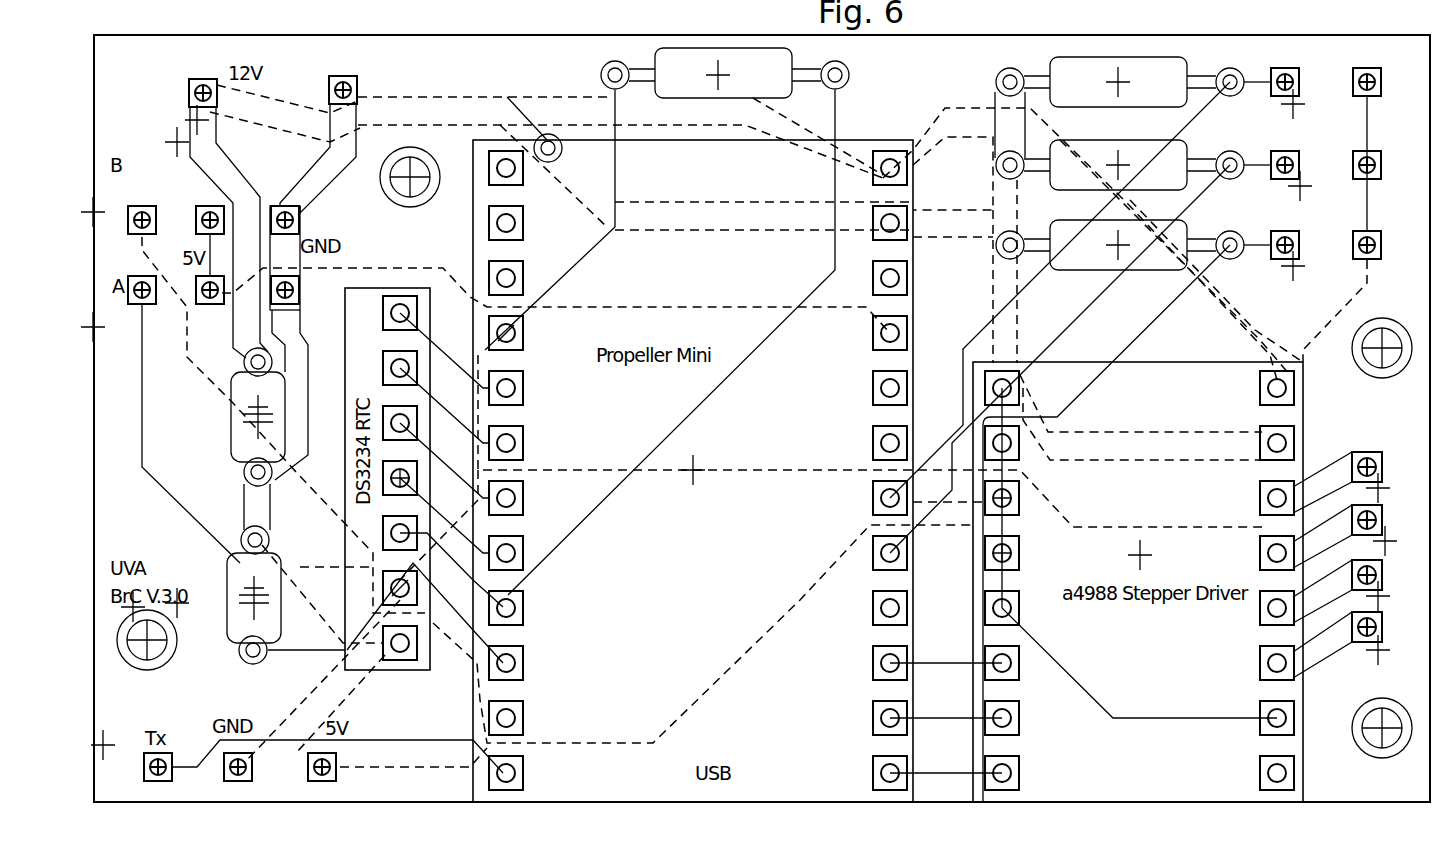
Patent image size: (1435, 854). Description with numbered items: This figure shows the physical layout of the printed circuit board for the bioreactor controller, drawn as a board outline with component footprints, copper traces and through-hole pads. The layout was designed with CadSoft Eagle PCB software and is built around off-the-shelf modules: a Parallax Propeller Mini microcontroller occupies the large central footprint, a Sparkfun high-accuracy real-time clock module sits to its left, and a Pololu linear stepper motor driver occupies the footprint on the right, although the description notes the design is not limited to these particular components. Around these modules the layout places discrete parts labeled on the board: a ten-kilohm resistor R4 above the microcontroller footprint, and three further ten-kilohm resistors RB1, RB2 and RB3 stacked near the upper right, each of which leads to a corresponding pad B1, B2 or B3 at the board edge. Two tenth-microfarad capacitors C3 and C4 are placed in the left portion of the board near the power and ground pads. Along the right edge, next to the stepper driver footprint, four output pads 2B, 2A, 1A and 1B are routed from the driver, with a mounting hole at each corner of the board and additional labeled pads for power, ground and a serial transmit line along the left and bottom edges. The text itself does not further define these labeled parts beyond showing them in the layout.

The 10k resistor R4 is at (725, 83).
The 10k resistor RB1 is at (1120, 95).
The 10k resistor RB2 is at (1120, 178).
The 10k resistor RB3 is at (1120, 259).
The 0.1uF capacitor C3 is at (249, 417).
The 0.1uF capacitor C4 is at (269, 595).
The button input B1 is at (1286, 93).
The button input B2 is at (1286, 176).
The button input B3 is at (1286, 256).
The stepper motor output 2B is at (1353, 482).
The stepper motor output 2A is at (1353, 536).
The stepper motor output 1A is at (1353, 591).
The stepper motor output 1B is at (1353, 645).